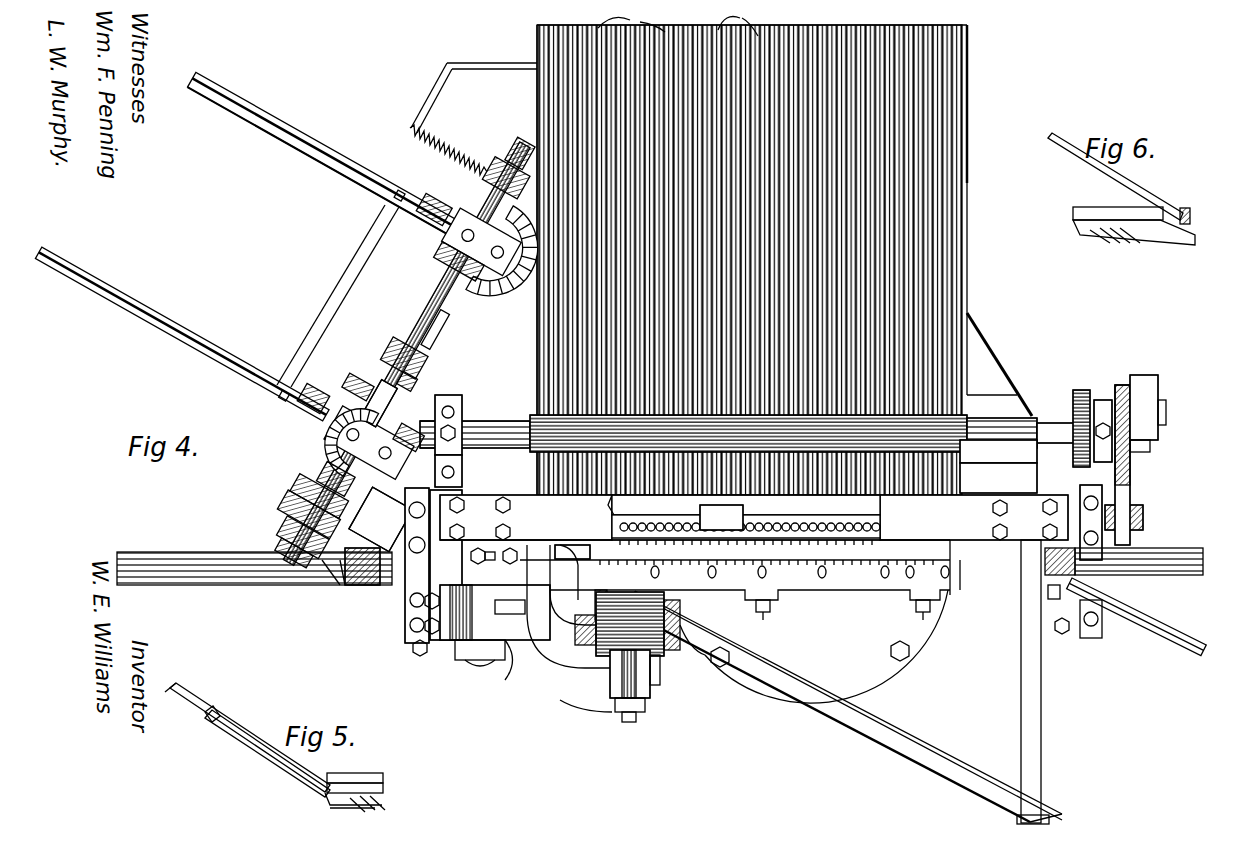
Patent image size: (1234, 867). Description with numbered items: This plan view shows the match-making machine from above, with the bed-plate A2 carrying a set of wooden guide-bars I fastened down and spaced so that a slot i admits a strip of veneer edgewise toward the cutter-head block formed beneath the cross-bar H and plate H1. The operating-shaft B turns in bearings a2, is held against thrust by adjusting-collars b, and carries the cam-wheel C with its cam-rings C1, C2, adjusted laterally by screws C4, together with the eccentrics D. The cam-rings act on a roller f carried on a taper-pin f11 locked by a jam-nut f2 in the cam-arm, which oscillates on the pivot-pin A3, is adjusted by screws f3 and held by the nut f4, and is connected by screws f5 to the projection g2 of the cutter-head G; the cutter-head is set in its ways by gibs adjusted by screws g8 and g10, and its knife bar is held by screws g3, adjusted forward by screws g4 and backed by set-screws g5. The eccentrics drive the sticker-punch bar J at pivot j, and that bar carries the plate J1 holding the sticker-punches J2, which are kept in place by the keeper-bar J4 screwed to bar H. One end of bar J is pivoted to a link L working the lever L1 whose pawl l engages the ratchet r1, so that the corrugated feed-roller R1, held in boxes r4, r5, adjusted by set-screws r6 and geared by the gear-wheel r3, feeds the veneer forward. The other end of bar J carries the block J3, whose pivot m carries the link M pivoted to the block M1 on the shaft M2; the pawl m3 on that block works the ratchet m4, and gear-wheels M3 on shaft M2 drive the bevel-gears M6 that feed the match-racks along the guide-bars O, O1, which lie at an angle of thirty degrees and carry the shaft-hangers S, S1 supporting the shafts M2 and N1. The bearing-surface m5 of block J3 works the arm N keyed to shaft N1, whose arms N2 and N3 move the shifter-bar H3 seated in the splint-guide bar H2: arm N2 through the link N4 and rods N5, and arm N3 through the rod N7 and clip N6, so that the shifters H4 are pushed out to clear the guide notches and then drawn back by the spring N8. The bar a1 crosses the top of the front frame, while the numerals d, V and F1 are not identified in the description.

In FIG. 4, the bed-plate A2 is at (964, 112).
In FIG. 4, the wooden guide-bars I is at (631, 21).
In FIG. 4, the slot i is at (738, 22).
In FIG. 4, the feed-roller R1 is at (540, 450).
In FIG. 4, the shaft-hanger S1 is at (455, 232).
In FIG. 4, the guide-bar O is at (318, 150).
In FIG. 4, the guide-bar O1 is at (170, 330).
In FIG. 4, the gear-wheels M3 is at (455, 255).
In FIG. 4, the rod N7 is at (525, 168).
In FIG. 6, the rod N7 is at (1138, 190).
In FIG. 4, the arm N3 is at (488, 180).
In FIG. 4, the spring N8 is at (455, 145).
In FIG. 4, the bevel-gears M6 is at (440, 200).
In FIG. 4, the arm N2 is at (372, 352).
In FIG. 4, the shaft N1 is at (398, 368).
In FIG. 4, the shaft-hanger S is at (335, 410).
In FIG. 4, the arm N is at (325, 455).
In FIG. 4, the link N4 is at (440, 396).
In FIG. 5, the link N4 is at (205, 710).
In FIG. 4, the set-screws r6 is at (462, 428).
In FIG. 4, the box r5 is at (462, 410).
In FIG. 4, the rods N5 is at (440, 398).
In FIG. 5, the rods N5 is at (255, 745).
In FIG. 4, the bearing-surface m5 is at (337, 495).
In FIG. 4, the block J3 is at (381, 519).
In FIG. 4, the ratchet m4 is at (300, 488).
In FIG. 4, the pawl m3 is at (300, 518).
In FIG. 4, the shaft M2 is at (300, 545).
In FIG. 4, the block M1 is at (330, 560).
In FIG. 4, the link M is at (335, 570).
In FIG. 4, the pivot m is at (348, 565).
In FIG. 4, the eccentrics D is at (370, 588).
In FIG. 4, the bracket d is at (428, 605).
In FIG. 4, the pivot j is at (753, 564).
In FIG. 4, the operating-shaft B is at (180, 566).
In FIG. 4, the bar a1 is at (754, 517).
In FIG. 4, the plate J1 is at (744, 505).
In FIG. 4, the sticker-punches J2 is at (745, 534).
In FIG. 4, the sticker-punch bar J is at (746, 517).
In FIG. 4, the cross-bar H is at (721, 517).
In FIG. 4, the plate H1 is at (982, 484).
In FIG. 4, the cutter-head G is at (695, 569).
In FIG. 4, the screws g3 is at (790, 562).
In FIG. 4, the set-screws g5 is at (782, 571).
In FIG. 4, the keeper-bar J4 is at (621, 547).
In FIG. 4, the screws g4 is at (843, 617).
In FIG. 4, the segment V is at (826, 646).
In FIG. 4, the adjusting-collars b is at (958, 595).
In FIG. 4, the bearings a2 is at (1010, 590).
In FIG. 4, the block F1 is at (495, 612).
In FIG. 4, the screws g8 is at (480, 546).
In FIG. 4, the screws g10 is at (1062, 640).
In FIG. 4, the screws f5 is at (605, 588).
In FIG. 4, the screws f3 is at (418, 648).
In FIG. 4, the nut f4 is at (458, 655).
In FIG. 4, the pivot-pin A3 is at (505, 670).
In FIG. 4, the projection g2 is at (572, 571).
In FIG. 4, the screws C4 is at (560, 672).
In FIG. 4, the cam-wheel C is at (665, 628).
In FIG. 4, the cam-ring C1 is at (620, 615).
In FIG. 4, the roller f is at (640, 680).
In FIG. 4, the taper-pin f11 is at (660, 678).
In FIG. 4, the jam-nut f2 is at (614, 710).
In FIG. 4, the cam-ring C2 is at (570, 705).
In FIG. 4, the gear-wheel r3 is at (1081, 390).
In FIG. 4, the box r4 is at (1105, 400).
In FIG. 4, the pawl l is at (1120, 400).
In FIG. 4, the link L is at (1130, 486).
In FIG. 4, the lever L1 is at (1150, 378).
In FIG. 4, the ratchet r1 is at (1130, 470).
In FIG. 6, the clip N6 is at (1192, 216).
In FIG. 5, the splint-guide bar H2 is at (355, 773).
In FIG. 6, the splint-guide bar H2 is at (1090, 208).
In FIG. 5, the shifter-bar H3 is at (383, 788).
In FIG. 6, the shifter-bar H3 is at (1080, 226).
In FIG. 5, the shifters H4 is at (388, 800).
In FIG. 6, the shifters H4 is at (1100, 240).